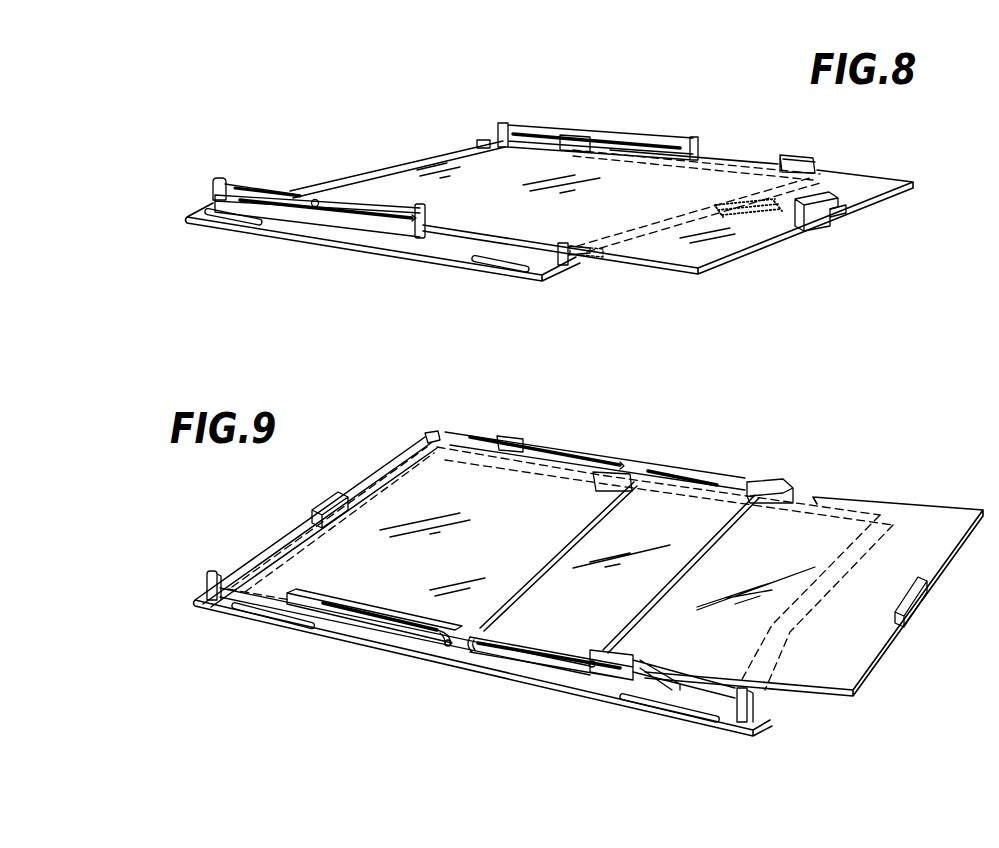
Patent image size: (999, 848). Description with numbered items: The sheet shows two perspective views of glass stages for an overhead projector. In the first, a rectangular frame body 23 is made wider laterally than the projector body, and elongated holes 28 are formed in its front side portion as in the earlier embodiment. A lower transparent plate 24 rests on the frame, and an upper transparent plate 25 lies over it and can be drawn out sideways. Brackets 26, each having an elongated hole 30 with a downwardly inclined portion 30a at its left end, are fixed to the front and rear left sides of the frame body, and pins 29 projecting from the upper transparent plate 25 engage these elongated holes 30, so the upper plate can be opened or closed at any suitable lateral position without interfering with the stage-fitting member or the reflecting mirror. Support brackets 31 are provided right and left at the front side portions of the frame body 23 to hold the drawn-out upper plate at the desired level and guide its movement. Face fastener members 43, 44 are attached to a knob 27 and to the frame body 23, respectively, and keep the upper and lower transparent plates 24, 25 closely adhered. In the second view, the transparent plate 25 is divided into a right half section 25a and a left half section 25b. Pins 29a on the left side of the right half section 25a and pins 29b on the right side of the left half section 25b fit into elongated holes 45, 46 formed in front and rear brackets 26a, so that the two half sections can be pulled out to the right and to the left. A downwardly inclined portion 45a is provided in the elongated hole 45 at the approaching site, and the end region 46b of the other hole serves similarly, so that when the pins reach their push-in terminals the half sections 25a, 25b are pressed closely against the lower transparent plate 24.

In FIG. 8, the rectangular frame body 23 is at (582, 258).
In FIG. 9, the rectangular frame body 23 is at (768, 707).
In FIG. 8, the lower transparent plate 24 is at (398, 177).
In FIG. 9, the lower transparent plate 24 is at (687, 508).
In FIG. 8, the upper transparent plate 25 is at (690, 255).
In FIG. 9, the upper transparent plate 25 is at (605, 561).
In FIG. 9, the right half section 25a is at (868, 648).
In FIG. 9, the left half section 25b is at (384, 487).
In FIG. 8, the bracket 26 is at (272, 190).
In FIG. 9, the bracket 26a is at (650, 462).
In FIG. 8, the knob 27 is at (821, 228).
In FIG. 8, the elongated hole 28 is at (240, 224).
In FIG. 9, the elongated hole 28 is at (267, 620).
In FIG. 8, the pin 29 is at (315, 210).
In FIG. 9, the pin 29a is at (592, 668).
In FIG. 9, the pin 29b is at (447, 647).
In FIG. 8, the elongated hole 30 is at (567, 135).
In FIG. 8, the downwardly inclined portion 30a is at (221, 181).
In FIG. 8, the support bracket 31 is at (797, 156).
In FIG. 8, the face fastener member 43 is at (847, 214).
In FIG. 8, the face fastener member 44 is at (755, 213).
In FIG. 9, the elongated hole 45 is at (562, 662).
In FIG. 9, the downwardly inclined portion 45a is at (473, 650).
In FIG. 9, the elongated hole 46 is at (382, 620).
In FIG. 9, the hook end 46b is at (450, 650).